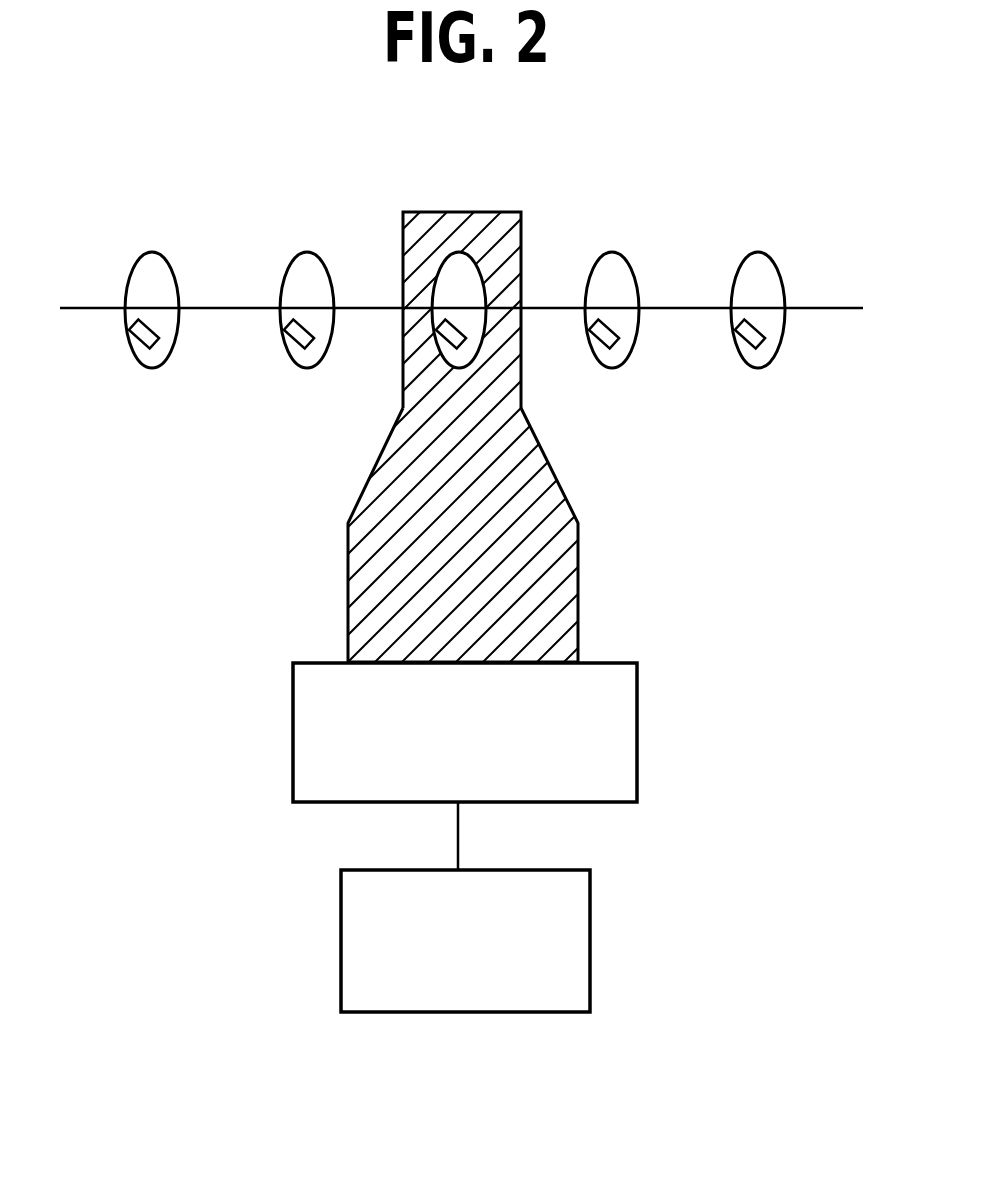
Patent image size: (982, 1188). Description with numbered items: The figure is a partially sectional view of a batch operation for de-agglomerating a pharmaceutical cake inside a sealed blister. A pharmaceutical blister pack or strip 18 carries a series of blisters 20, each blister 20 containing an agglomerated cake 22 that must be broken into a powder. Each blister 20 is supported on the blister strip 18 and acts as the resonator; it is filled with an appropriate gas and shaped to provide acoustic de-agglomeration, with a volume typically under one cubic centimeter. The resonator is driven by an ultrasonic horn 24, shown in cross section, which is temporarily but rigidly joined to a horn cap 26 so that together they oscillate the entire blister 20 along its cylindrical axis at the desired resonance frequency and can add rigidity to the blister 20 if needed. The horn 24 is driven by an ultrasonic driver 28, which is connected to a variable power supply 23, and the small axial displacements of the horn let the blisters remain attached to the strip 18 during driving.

The blister strip 18 is at (833, 324).
The blister 20 is at (468, 255).
The agglomerated cake 22 is at (283, 342).
The ultrasonic horn 24 is at (348, 578).
The horn cap 26 is at (426, 213).
The ultrasonic driver 28 is at (637, 726).
The variable power supply 23 is at (591, 947).